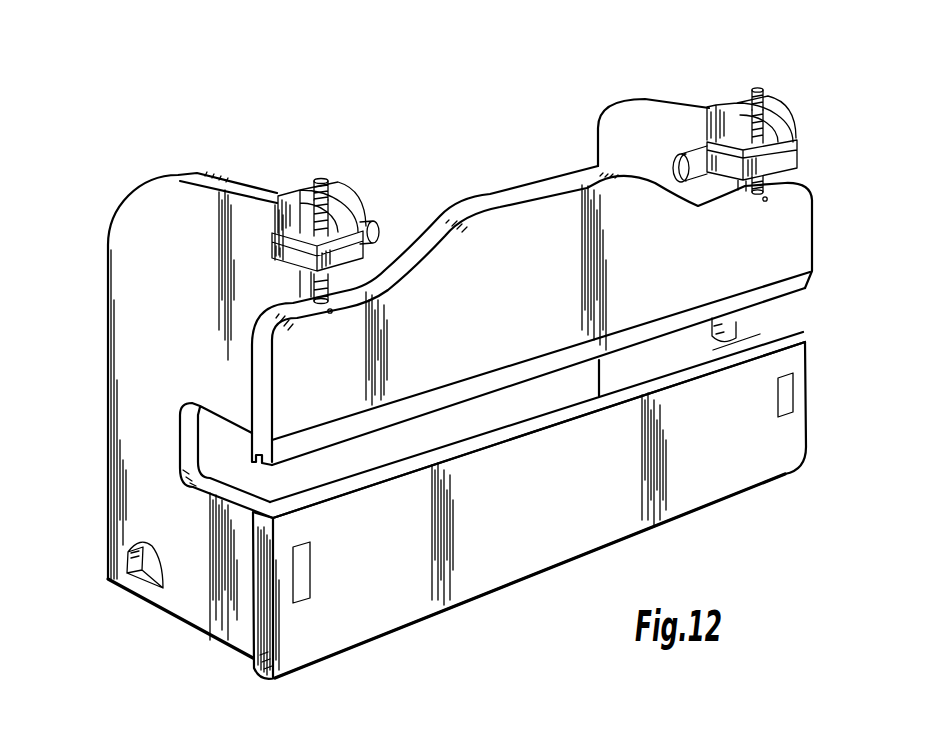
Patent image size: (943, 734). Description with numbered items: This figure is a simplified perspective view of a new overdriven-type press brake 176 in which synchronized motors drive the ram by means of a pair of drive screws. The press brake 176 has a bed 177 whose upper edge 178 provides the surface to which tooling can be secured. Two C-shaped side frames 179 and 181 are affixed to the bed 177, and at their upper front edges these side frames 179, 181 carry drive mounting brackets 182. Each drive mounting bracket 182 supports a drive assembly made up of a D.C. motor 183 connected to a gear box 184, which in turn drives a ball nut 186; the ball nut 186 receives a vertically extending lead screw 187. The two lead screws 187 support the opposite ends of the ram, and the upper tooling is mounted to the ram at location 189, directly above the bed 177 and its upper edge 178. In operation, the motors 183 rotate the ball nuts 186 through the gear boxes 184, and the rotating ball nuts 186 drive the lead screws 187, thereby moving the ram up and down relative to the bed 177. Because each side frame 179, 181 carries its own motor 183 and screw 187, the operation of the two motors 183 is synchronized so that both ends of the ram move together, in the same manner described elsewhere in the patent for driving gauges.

The press brake 176 is at (465, 345).
The bed 177 is at (728, 480).
The upper edge of the bed 178 is at (520, 427).
The C-shaped side frame 179 is at (131, 410).
The C-shaped side frame 181 is at (742, 330).
The drive mounting bracket 182 is at (717, 107).
The D.C. motor 183 is at (380, 223).
The gear box 184 is at (275, 253).
The ball nut 186 is at (330, 232).
The lead screw 187 is at (316, 180).
The upper tooling mounting location 189 is at (447, 408).